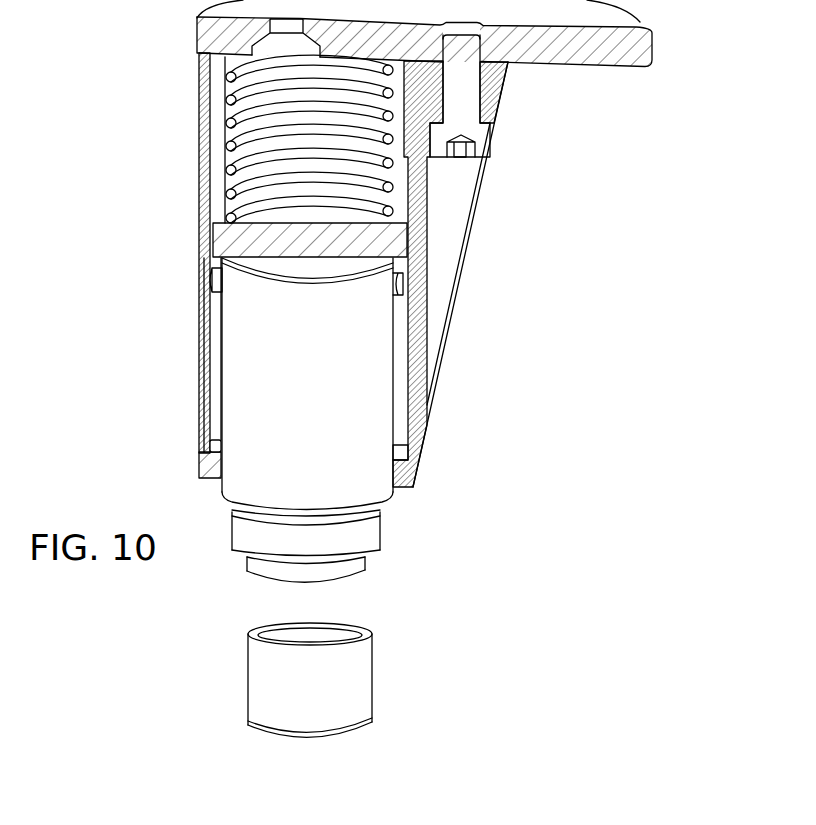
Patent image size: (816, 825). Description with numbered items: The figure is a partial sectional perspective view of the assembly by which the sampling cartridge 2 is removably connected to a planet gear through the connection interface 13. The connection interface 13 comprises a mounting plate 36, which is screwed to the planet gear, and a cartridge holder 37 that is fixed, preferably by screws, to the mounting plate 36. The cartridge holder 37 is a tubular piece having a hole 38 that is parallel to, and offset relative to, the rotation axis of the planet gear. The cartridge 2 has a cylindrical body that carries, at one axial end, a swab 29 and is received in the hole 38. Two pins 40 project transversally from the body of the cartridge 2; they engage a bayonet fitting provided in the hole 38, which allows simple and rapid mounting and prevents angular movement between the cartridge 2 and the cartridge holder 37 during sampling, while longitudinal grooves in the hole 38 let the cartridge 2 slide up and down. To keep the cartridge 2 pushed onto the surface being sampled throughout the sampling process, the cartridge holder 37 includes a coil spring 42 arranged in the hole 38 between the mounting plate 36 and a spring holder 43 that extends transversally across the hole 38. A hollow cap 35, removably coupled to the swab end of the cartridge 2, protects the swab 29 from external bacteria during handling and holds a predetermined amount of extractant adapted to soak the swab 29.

The cartridge 2 is at (388, 385).
The connection interface 13 is at (538, 113).
The swab 29 is at (352, 572).
The hollow cap 35 is at (364, 682).
The mounting plate 36 is at (610, 58).
The cartridge holder 37 is at (455, 193).
The hole 38 is at (252, 147).
The pins 40 is at (404, 283).
The coil spring 42 is at (228, 86).
The spring holder 43 is at (228, 241).